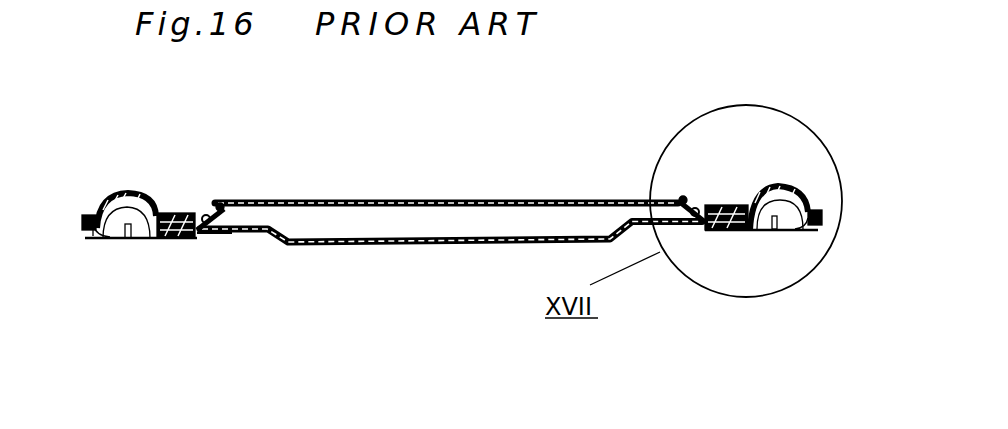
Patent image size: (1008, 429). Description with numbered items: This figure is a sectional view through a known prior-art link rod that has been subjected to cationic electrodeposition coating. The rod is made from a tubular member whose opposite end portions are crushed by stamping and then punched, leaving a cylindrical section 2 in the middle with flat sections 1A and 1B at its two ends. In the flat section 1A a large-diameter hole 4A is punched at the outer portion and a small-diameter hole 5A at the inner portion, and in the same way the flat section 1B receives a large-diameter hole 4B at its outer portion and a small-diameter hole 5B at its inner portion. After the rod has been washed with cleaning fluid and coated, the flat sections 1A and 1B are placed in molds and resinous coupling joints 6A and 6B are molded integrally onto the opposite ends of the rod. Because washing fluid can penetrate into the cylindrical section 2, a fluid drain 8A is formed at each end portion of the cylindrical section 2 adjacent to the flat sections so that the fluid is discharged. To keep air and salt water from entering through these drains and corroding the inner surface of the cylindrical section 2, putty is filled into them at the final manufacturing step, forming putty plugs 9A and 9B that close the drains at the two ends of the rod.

The cylindrical section 2 is at (453, 215).
The flat section 1A is at (84, 210).
The flat section 1B is at (824, 214).
The large-diameter hole 4A is at (133, 240).
The large-diameter hole 4B is at (753, 236).
The small-diameter hole 5A is at (185, 213).
The small-diameter hole 5B is at (720, 208).
The resinous coupling joint 6A is at (115, 238).
The resinous coupling joint 6B is at (770, 232).
The fluid drain 8A is at (230, 232).
The putty plug 9A is at (213, 200).
The putty plug 9B is at (693, 203).